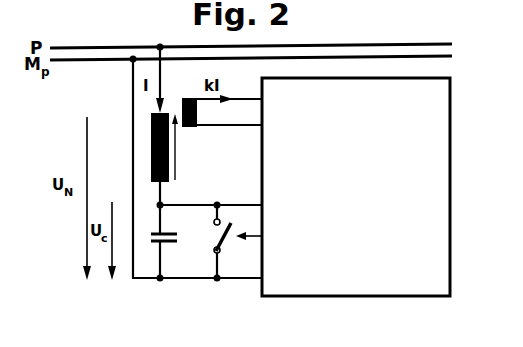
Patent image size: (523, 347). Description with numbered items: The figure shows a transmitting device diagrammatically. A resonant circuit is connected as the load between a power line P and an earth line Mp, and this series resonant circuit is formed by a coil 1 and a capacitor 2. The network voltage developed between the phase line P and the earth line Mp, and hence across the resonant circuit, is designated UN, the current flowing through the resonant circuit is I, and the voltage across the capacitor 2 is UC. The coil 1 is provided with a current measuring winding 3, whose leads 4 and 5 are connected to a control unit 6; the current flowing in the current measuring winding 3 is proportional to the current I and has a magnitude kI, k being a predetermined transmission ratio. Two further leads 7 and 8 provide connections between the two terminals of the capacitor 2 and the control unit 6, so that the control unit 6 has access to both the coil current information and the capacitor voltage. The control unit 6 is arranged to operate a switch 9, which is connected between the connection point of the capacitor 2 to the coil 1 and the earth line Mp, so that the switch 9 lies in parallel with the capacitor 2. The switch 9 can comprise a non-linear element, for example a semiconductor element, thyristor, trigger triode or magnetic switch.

The coil 1 is at (151, 150).
The capacitor 2 is at (165, 243).
The current measuring winding 3 is at (186, 98).
The lead 4 is at (250, 98).
The lead 5 is at (231, 126).
The control unit 6 is at (360, 128).
The further lead 7 is at (243, 204).
The further lead 8 is at (235, 279).
The switch 9 is at (228, 238).